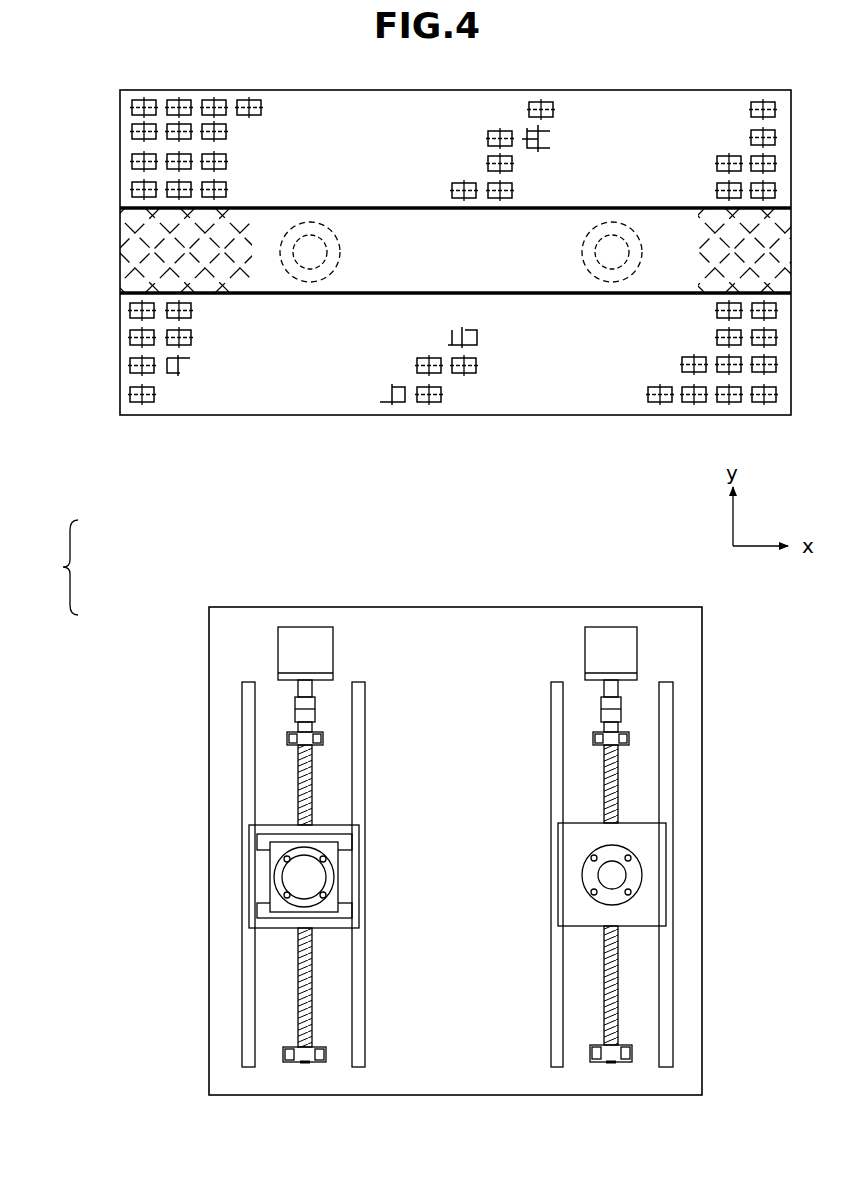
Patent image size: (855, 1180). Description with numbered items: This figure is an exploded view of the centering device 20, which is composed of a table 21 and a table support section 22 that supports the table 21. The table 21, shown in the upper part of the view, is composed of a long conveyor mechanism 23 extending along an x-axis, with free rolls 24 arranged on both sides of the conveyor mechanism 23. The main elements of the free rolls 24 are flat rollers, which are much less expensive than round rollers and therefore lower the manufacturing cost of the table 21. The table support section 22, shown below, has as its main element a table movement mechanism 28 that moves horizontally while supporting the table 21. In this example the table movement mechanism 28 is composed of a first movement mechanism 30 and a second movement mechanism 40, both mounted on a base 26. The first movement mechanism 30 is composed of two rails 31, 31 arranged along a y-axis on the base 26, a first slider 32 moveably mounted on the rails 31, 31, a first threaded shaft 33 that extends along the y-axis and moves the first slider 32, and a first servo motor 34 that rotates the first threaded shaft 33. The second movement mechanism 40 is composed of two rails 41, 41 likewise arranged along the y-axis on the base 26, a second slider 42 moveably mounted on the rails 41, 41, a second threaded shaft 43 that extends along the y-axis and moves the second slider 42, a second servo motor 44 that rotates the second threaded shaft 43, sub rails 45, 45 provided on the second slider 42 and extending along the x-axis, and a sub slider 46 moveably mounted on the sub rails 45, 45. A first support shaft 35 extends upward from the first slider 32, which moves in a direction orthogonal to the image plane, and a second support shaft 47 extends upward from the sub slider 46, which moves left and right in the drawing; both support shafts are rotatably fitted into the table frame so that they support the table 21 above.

The centering device 20 is at (54, 567).
The table 21 is at (108, 425).
The table support section 22 is at (425, 840).
The conveyor mechanism 23 is at (370, 295).
The free rolls 24 is at (183, 105).
The base 26 is at (447, 630).
The table movement mechanism 28 is at (230, 1009).
The first movement mechanism 30 is at (624, 840).
The rails 31 is at (557, 1068).
The first slider 32 is at (624, 874).
The first threaded shaft 33 is at (618, 770).
The first servo motor 34 is at (620, 650).
The first support shaft 35 is at (610, 875).
The second movement mechanism 40 is at (286, 840).
The rails 41 is at (250, 1068).
The second slider 42 is at (286, 875).
The second threaded shaft 43 is at (300, 782).
The second servo motor 44 is at (292, 655).
The sub rails 45 is at (350, 840).
The sub slider 46 is at (340, 892).
The second support shaft 47 is at (312, 877).